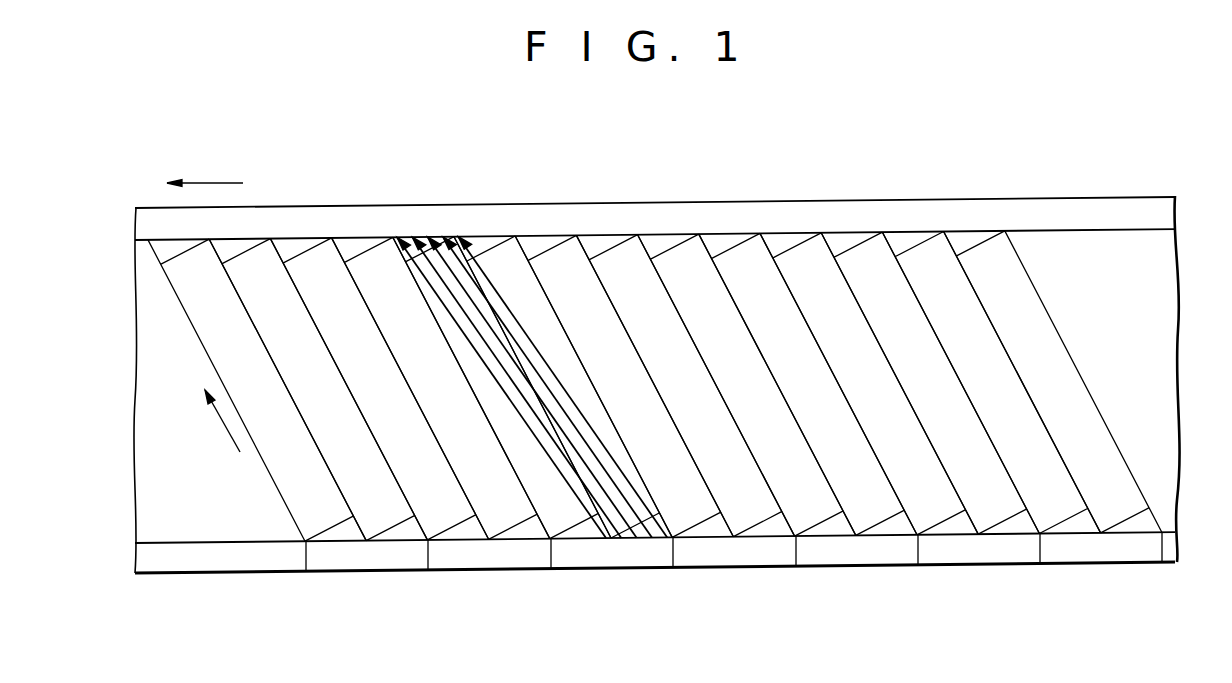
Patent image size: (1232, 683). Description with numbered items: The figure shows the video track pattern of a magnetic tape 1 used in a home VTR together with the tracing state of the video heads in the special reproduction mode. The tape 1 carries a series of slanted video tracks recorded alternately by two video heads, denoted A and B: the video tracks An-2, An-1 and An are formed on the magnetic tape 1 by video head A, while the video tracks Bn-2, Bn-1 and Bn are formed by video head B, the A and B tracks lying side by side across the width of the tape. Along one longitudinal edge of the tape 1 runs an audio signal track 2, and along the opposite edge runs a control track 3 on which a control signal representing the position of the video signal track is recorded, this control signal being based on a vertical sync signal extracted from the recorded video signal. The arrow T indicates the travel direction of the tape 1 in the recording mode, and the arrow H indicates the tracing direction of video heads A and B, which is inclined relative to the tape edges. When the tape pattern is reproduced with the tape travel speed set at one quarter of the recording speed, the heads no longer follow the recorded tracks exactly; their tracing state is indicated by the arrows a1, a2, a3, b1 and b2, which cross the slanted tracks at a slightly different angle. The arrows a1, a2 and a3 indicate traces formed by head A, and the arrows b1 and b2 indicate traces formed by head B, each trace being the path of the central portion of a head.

The magnetic tape 1 is at (1160, 318).
The audio signal track 2 is at (1162, 220).
The control track 3 is at (1165, 547).
The video track A (n-2) An-2 is at (325, 522).
The video track B (n-2) Bn-2 is at (385, 516).
The video track A (n-1) An-1 is at (444, 516).
The video track B (n-1) Bn-1 is at (505, 516).
The video track A (n) An is at (571, 515).
The video track B (n) Bn is at (624, 507).
The trace of head A a1 is at (396, 237).
The trace of head B b1 is at (412, 237).
The trace of head A a2 is at (428, 237).
The trace of head B b2 is at (443, 237).
The trace of head A a3 is at (459, 237).
The tape travel direction arrow T is at (217, 183).
The head tracing direction arrow H is at (211, 410).